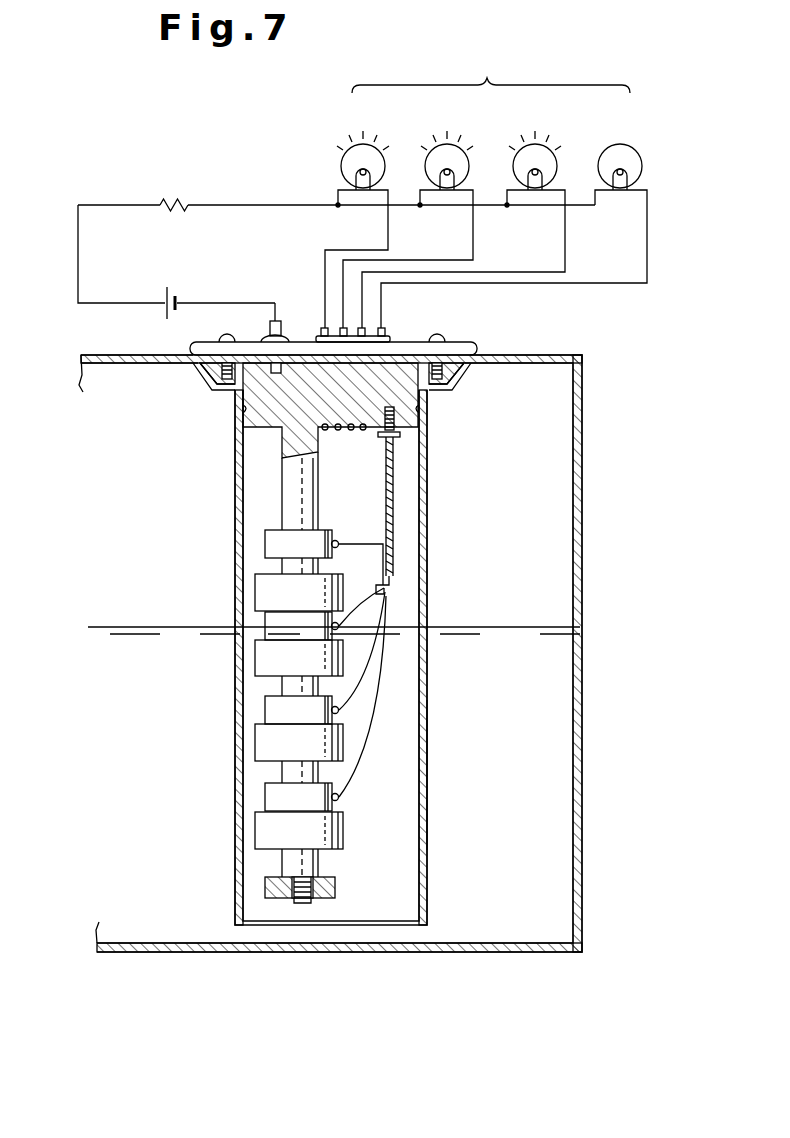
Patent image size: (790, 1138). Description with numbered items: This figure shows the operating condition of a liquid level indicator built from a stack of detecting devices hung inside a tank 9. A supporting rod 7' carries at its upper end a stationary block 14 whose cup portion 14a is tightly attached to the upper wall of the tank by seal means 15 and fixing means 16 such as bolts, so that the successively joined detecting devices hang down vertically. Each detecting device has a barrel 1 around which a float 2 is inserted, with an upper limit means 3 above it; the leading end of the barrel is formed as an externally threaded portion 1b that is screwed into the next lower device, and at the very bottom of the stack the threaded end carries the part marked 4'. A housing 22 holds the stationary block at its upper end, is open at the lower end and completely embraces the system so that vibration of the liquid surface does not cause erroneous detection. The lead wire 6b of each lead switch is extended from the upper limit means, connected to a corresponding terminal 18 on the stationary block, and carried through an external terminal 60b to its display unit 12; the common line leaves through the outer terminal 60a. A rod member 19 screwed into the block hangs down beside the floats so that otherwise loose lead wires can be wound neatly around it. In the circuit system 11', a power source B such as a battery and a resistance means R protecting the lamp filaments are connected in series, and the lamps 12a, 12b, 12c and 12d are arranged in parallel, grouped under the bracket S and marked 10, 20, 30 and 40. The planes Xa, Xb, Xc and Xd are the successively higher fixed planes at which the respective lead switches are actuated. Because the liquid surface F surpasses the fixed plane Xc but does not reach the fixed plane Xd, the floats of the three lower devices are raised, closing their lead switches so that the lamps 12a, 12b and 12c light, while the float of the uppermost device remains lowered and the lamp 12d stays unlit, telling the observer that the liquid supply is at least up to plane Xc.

The barrel 1 is at (284, 567).
The externally threaded portion 1b is at (304, 904).
The float 2 is at (258, 595).
The upper limit means 3 is at (270, 544).
The nut 4' is at (333, 891).
The lead wire 6b is at (382, 712).
The supporting rod 7' is at (238, 497).
The tank 9 is at (580, 468).
The lead switch 10 is at (363, 145).
The spacer 20 is at (447, 145).
The lamp 30 is at (535, 145).
The lamp 40 is at (620, 145).
The circuit system 11' is at (636, 324).
The display unit 12 is at (445, 145).
The lamp 12a is at (363, 190).
The lamp 12b is at (447, 190).
The lamp 12c is at (535, 190).
The lamp 12d is at (620, 190).
The stationary block 14 is at (266, 442).
The cup portion 14a is at (484, 346).
The seal means 15 is at (456, 380).
The fixing means 16 is at (441, 338).
The terminal 18 is at (363, 430).
The rod member 19 is at (395, 503).
The housing 22 is at (426, 797).
The outer terminal 60a is at (283, 322).
The external terminal 60b is at (383, 328).
The resistance means R is at (177, 205).
The power source B is at (174, 301).
The lamp group S is at (491, 73).
The liquid surface F is at (326, 629).
The fixed plane Xd is at (578, 603).
The fixed plane Xc is at (578, 688).
The fixed plane Xb is at (578, 778).
The fixed plane Xa is at (578, 868).